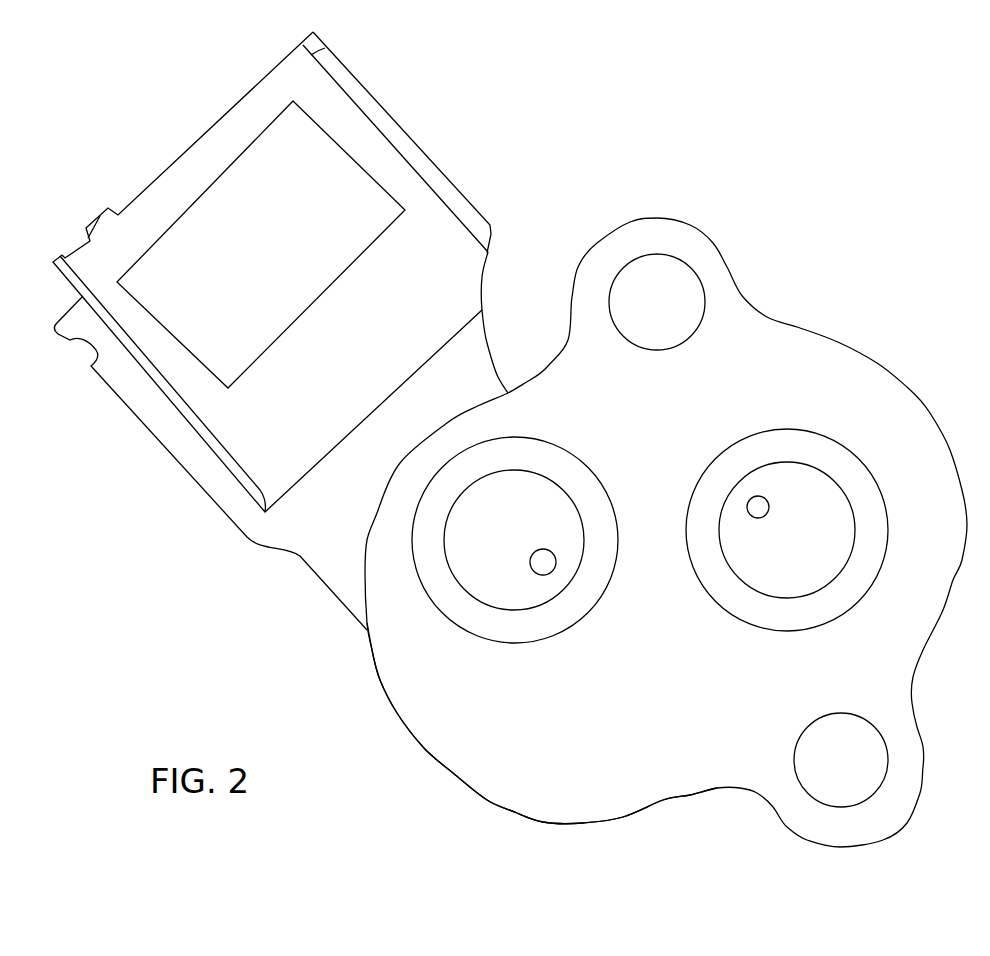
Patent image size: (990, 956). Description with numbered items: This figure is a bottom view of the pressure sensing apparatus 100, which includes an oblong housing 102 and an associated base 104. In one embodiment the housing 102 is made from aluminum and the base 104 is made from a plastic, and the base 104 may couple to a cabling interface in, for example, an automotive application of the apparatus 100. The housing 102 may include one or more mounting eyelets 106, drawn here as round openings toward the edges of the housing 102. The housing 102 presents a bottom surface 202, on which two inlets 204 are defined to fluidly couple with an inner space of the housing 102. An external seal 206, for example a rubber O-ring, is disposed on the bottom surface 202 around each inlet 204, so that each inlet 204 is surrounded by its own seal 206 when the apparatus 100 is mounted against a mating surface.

The pressure sensing apparatus 100 is at (86, 450).
The housing 102 is at (923, 404).
The base 104 is at (430, 158).
The mounting eyelets 106 is at (639, 314).
The bottom surface 202 is at (492, 792).
The inlets 204 is at (534, 557).
The external seal 206 is at (580, 473).